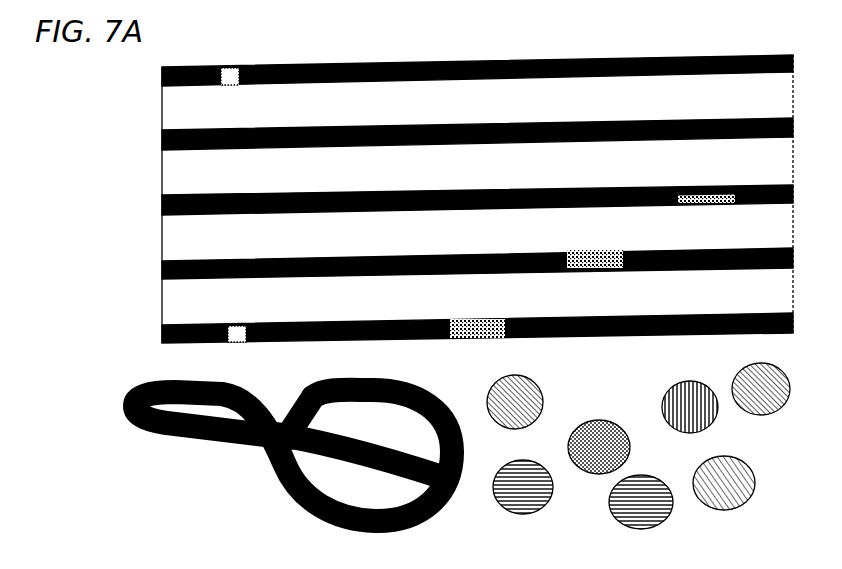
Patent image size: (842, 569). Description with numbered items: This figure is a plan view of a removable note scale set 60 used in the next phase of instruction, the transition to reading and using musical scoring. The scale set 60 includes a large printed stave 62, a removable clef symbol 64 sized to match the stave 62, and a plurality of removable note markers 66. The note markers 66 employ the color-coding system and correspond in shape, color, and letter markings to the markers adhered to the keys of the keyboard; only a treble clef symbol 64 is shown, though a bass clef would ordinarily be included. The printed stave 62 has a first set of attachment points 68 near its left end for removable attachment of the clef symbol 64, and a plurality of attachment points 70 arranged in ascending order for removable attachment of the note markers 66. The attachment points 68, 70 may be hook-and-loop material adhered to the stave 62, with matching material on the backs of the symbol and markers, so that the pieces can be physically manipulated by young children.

The removable note scale set 60 is at (416, 187).
The printed stave 62 is at (597, 57).
The removable clef symbol 64 is at (258, 490).
The removable note markers 66 is at (543, 390).
The first set of attachment points 68 is at (229, 86).
The attachment points 70 is at (572, 270).